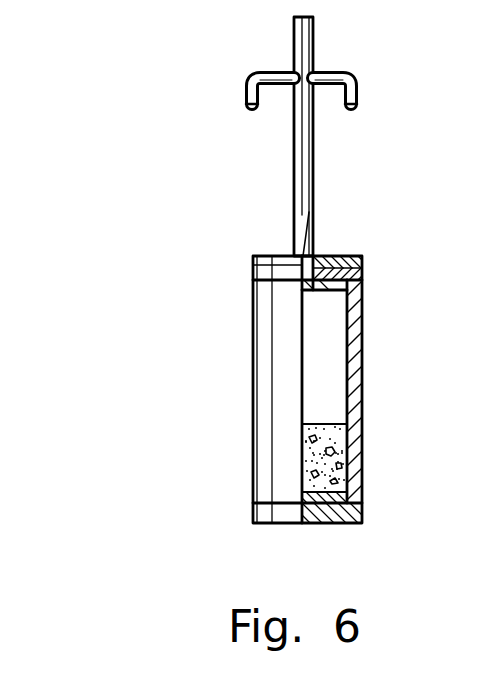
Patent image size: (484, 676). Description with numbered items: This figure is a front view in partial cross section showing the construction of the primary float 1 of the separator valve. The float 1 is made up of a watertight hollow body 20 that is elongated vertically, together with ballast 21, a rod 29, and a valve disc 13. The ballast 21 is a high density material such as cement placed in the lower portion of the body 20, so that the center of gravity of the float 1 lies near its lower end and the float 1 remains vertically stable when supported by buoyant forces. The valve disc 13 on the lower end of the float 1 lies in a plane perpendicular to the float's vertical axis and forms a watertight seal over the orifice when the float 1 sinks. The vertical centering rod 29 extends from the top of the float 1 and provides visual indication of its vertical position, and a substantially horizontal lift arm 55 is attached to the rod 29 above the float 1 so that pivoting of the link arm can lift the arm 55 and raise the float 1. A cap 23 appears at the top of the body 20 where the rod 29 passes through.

The primary float 1 is at (228, 355).
The valve disc 13 is at (343, 521).
The watertight hollow body 20 is at (352, 350).
The ballast 21 is at (336, 457).
The cap 23 is at (337, 262).
The centering rod 29 is at (303, 168).
The lift arm 55 is at (344, 80).